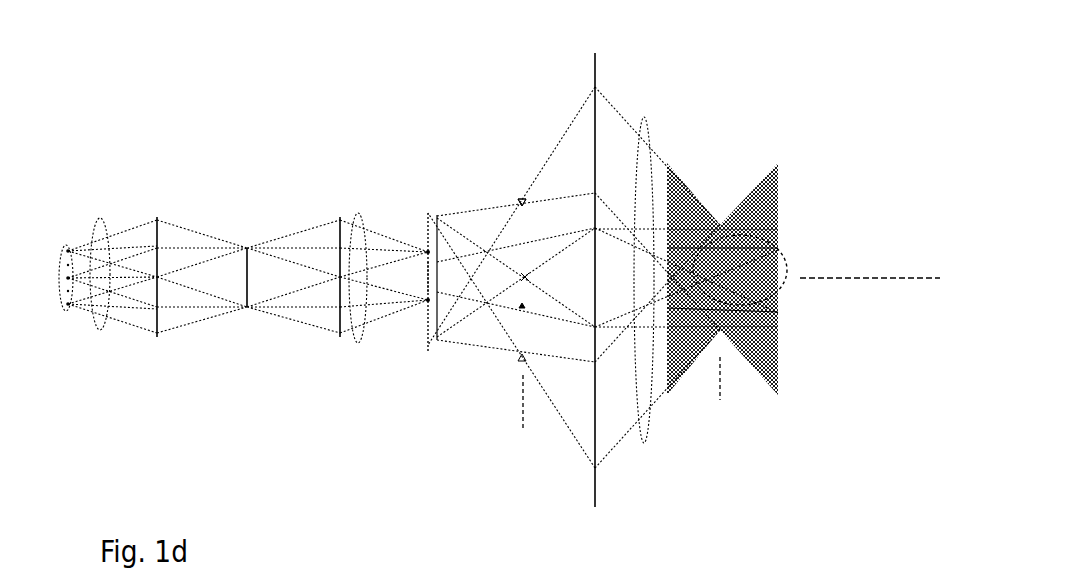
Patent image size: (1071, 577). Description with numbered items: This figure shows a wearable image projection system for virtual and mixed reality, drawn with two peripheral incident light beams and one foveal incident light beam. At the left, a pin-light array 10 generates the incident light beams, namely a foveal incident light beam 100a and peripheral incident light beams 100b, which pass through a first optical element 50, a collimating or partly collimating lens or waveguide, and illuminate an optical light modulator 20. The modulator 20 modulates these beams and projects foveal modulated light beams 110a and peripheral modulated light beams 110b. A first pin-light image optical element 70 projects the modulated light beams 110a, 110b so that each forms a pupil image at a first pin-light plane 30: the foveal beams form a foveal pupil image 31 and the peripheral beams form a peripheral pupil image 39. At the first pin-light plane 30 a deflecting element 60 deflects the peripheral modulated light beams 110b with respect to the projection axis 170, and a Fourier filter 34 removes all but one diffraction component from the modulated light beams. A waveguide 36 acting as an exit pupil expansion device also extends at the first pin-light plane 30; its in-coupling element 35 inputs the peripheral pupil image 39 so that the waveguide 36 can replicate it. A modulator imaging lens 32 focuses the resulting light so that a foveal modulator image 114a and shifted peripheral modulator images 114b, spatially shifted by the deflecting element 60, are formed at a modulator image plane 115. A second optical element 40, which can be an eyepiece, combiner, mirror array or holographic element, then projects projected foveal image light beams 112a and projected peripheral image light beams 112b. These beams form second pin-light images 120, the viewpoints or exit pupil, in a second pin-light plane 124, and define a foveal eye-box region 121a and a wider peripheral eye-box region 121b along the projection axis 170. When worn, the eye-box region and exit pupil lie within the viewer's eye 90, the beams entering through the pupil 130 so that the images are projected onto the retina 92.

The pin-light array 10 is at (64, 236).
The foveal incident light beam 100a is at (143, 237).
The peripheral incident light beam 100b is at (100, 214).
The first optical element 50 is at (158, 214).
The optical light modulator 20 is at (247, 246).
The first pin-light image optical element 70 is at (339, 211).
The foveal modulated light beam 110a is at (324, 234).
The peripheral modulated light beam 110b is at (357, 209).
The first pin-light plane 30 is at (427, 314).
The modulator imaging lens 32 is at (436, 338).
The in-coupling element 35 is at (436, 242).
The waveguide 36 is at (432, 209).
The peripheral pupil image 39 is at (427, 246).
The deflecting element 60 is at (423, 252).
The foveal pupil image 31 is at (418, 265).
The Fourier filter 34 is at (424, 303).
The foveal modulator image 114a is at (522, 313).
The shifted peripheral modulator image 114b is at (520, 197).
The modulator image plane 115 is at (517, 428).
The second optical element 40 is at (598, 69).
The projected foveal image light beam 112a is at (692, 255).
The projected peripheral image light beam 112b is at (645, 117).
The foveal eye-box region 121a is at (736, 304).
The peripheral eye-box region 121b is at (757, 279).
The pupil 130 is at (757, 263).
The viewer's eye 90 is at (754, 282).
The retina 92 is at (782, 300).
The second pin-light image 120 is at (722, 308).
The second pin-light plane 124 is at (722, 418).
The projection axis 170 is at (867, 284).